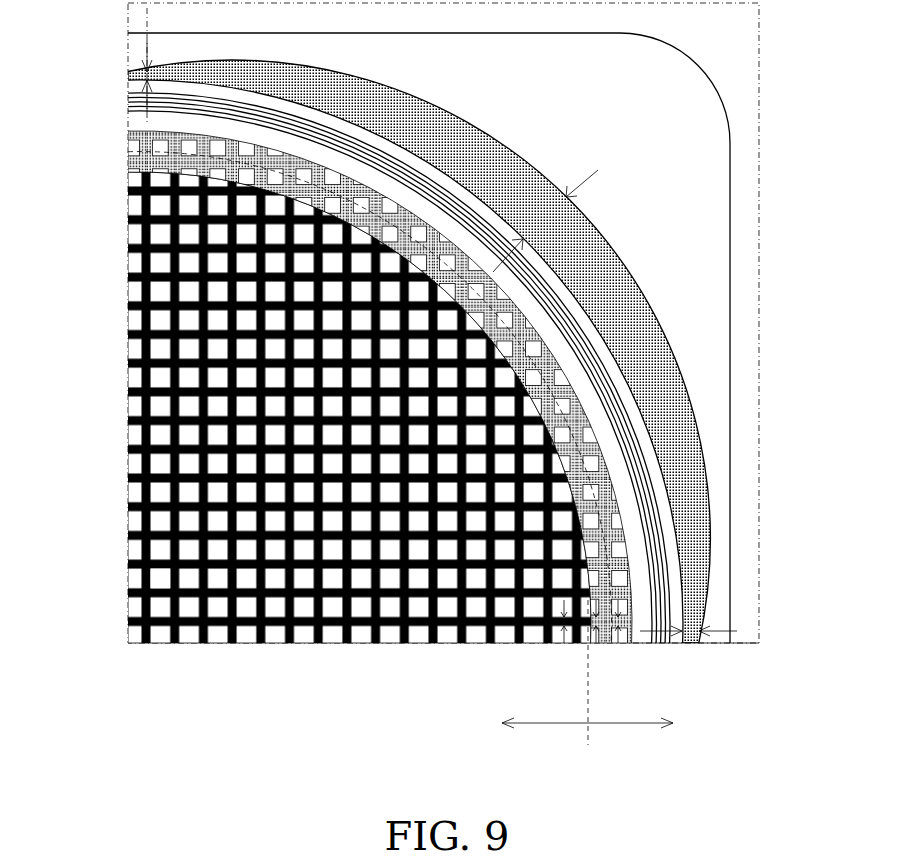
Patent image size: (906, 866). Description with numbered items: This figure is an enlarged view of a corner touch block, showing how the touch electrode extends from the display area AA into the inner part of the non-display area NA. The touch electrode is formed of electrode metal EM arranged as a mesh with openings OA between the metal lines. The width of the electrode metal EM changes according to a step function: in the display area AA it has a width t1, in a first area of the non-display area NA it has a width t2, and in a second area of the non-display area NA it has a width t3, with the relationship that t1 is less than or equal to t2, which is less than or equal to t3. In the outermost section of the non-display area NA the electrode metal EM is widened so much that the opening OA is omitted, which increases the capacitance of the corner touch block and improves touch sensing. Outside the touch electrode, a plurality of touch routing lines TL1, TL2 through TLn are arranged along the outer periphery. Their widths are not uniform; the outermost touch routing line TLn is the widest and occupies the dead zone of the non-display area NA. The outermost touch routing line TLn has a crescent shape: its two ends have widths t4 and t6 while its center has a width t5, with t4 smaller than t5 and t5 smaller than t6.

The outermost touch routing line TLn is at (128, 78).
The touch routing line TL2 is at (128, 99).
The touch routing line TL1 is at (128, 108).
The electrode metal EM is at (141, 522).
The opening OA is at (158, 579).
The width of the electrode metal in the display area t1 is at (565, 630).
The width of the electrode metal in the first area of the non-display area t2 is at (597, 630).
The width of the electrode metal in the second area of the non-display area t3 is at (620, 630).
The width of one end of the outermost touch routing line t4 is at (698, 629).
The width of the center of the outermost touch routing line t5 is at (555, 211).
The width of the other end of the outermost touch routing line t6 is at (155, 66).
The display area AA is at (545, 675).
The non-display area NA is at (630, 734).